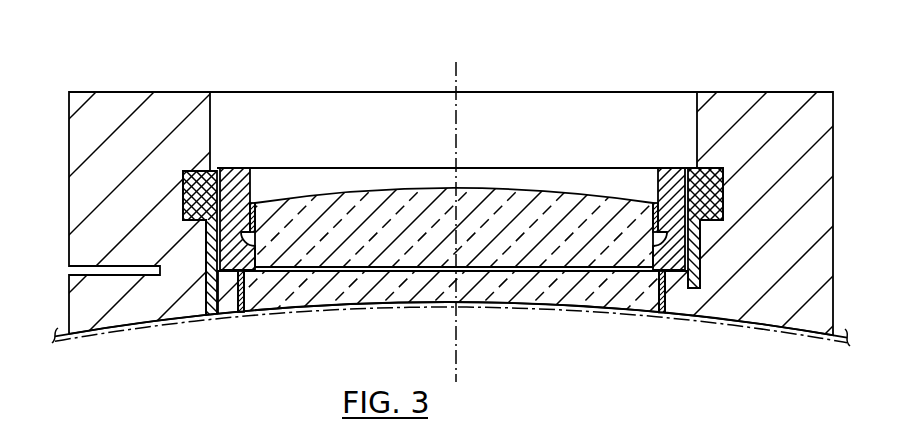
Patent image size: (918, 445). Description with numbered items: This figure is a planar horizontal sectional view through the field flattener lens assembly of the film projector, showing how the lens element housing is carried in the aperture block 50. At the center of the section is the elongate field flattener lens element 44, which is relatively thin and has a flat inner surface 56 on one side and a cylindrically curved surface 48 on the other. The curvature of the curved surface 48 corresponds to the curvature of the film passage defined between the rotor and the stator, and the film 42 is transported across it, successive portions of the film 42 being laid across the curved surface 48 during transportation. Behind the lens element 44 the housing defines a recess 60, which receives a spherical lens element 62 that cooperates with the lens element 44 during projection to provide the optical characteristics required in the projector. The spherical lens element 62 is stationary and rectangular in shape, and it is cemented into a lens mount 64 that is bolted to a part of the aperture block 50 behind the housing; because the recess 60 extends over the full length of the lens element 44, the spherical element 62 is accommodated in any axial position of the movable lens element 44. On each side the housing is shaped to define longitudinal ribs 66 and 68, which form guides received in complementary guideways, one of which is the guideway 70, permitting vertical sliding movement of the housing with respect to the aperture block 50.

The film 42 is at (728, 332).
The field flattener lens element 44 is at (515, 288).
The cylindrically curved surface 48 is at (326, 306).
The aperture block 50 is at (119, 86).
The flat inner surface 56 is at (372, 270).
The recess 60 is at (697, 107).
The spherical lens element 62 is at (511, 213).
The lens mount 64 is at (675, 168).
The longitudinal rib 66 is at (216, 168).
The longitudinal rib 68 is at (708, 188).
The guideway 70 is at (200, 168).